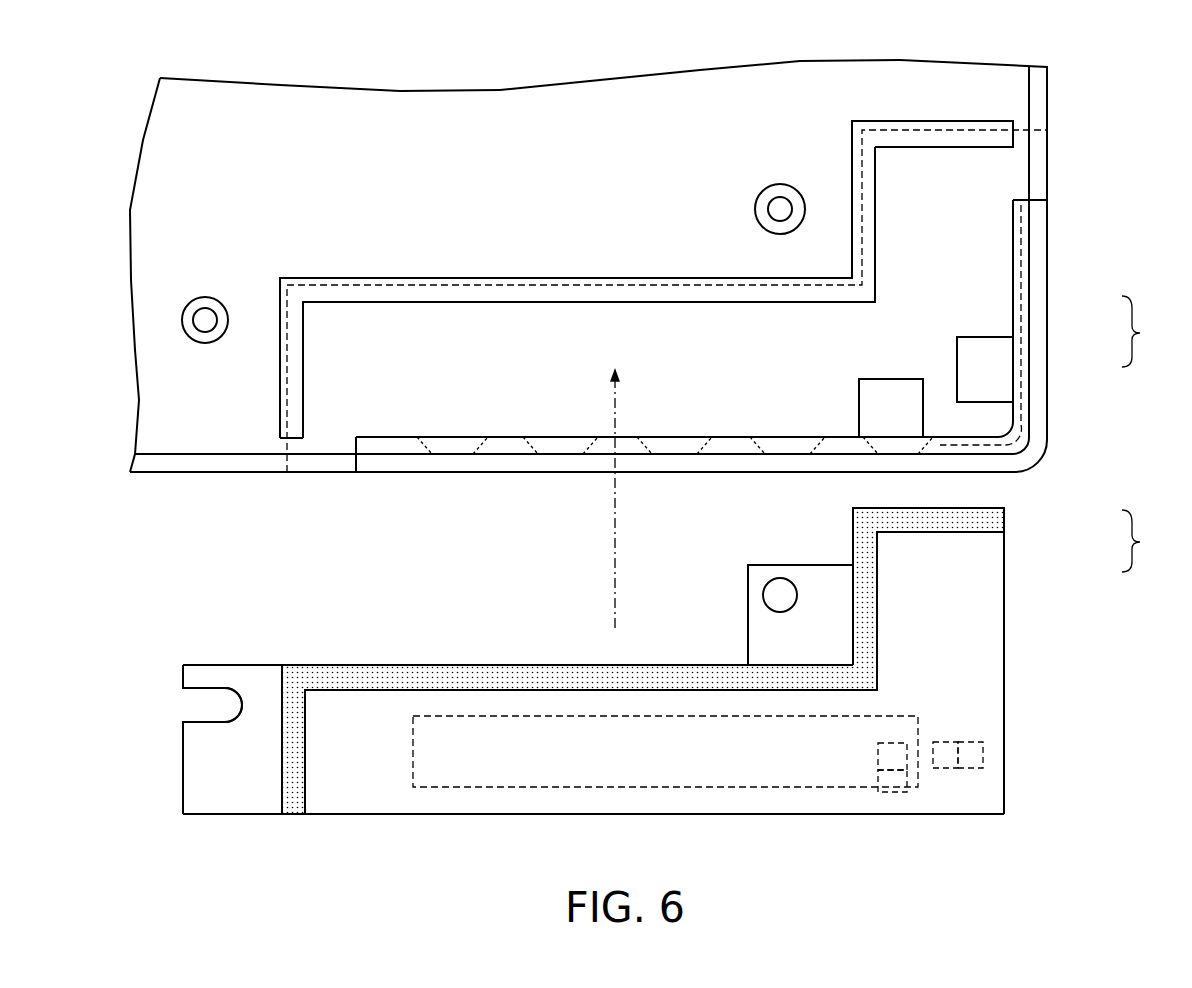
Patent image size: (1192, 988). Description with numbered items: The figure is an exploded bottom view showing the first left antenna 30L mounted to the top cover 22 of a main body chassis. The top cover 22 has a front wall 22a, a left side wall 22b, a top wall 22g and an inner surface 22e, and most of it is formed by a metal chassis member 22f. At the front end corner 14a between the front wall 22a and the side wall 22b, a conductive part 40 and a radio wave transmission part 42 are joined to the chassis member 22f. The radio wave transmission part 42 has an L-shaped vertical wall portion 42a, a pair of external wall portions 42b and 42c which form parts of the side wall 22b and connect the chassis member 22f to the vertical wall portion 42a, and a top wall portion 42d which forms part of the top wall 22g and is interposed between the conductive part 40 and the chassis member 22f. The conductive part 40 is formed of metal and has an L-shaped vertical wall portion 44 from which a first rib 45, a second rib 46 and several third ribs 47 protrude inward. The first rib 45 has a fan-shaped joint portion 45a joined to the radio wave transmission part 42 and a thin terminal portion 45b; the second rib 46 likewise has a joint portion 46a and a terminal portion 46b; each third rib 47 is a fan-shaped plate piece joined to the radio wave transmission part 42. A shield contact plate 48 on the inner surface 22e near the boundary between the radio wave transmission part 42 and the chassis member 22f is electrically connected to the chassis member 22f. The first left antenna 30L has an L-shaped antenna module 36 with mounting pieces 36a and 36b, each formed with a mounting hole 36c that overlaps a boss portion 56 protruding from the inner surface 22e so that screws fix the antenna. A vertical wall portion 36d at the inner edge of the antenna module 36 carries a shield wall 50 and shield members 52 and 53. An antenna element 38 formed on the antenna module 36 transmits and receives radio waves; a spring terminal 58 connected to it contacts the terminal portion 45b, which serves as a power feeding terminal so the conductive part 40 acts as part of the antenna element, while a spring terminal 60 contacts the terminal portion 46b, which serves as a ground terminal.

The top cover 22 is at (300, 108).
The front wall 22a is at (178, 462).
The left side wall 22b is at (1040, 85).
The inner surface 22e is at (416, 113).
The chassis member 22f is at (634, 113).
The top wall 22g is at (800, 65).
The radio wave transmission part 42 is at (378, 412).
The vertical wall portion 42a is at (712, 447).
The external wall portion 42b is at (328, 462).
The external wall portion 42c is at (1038, 186).
The top wall portion 42d is at (470, 325).
The shield contact plate 48 is at (571, 290).
The boss portion 56 is at (780, 184).
The third rib 47 is at (447, 445).
The second rib 46 is at (1148, 331).
The joint portion 46a is at (1022, 368).
The terminal portion 46b is at (983, 337).
The first rib 45 is at (1148, 541).
The joint portion 45a is at (903, 446).
The terminal portion 45b is at (923, 410).
The front end corner 14a is at (1040, 462).
The vertical wall portion 44 is at (822, 463).
The conductive part 40 is at (562, 479).
The antenna module 36 is at (983, 620).
The mounting piece 36a is at (200, 757).
The mounting piece 36b is at (772, 635).
The mounting hole 36c is at (190, 700).
The vertical wall portion 36d is at (355, 665).
The shield wall 50 is at (407, 665).
The shield member 52 is at (654, 673).
The shield member 53 is at (530, 680).
The antenna element 38 is at (513, 788).
The spring terminal 58 is at (886, 793).
The spring terminal 60 is at (985, 748).
The first left antenna 30L is at (363, 825).